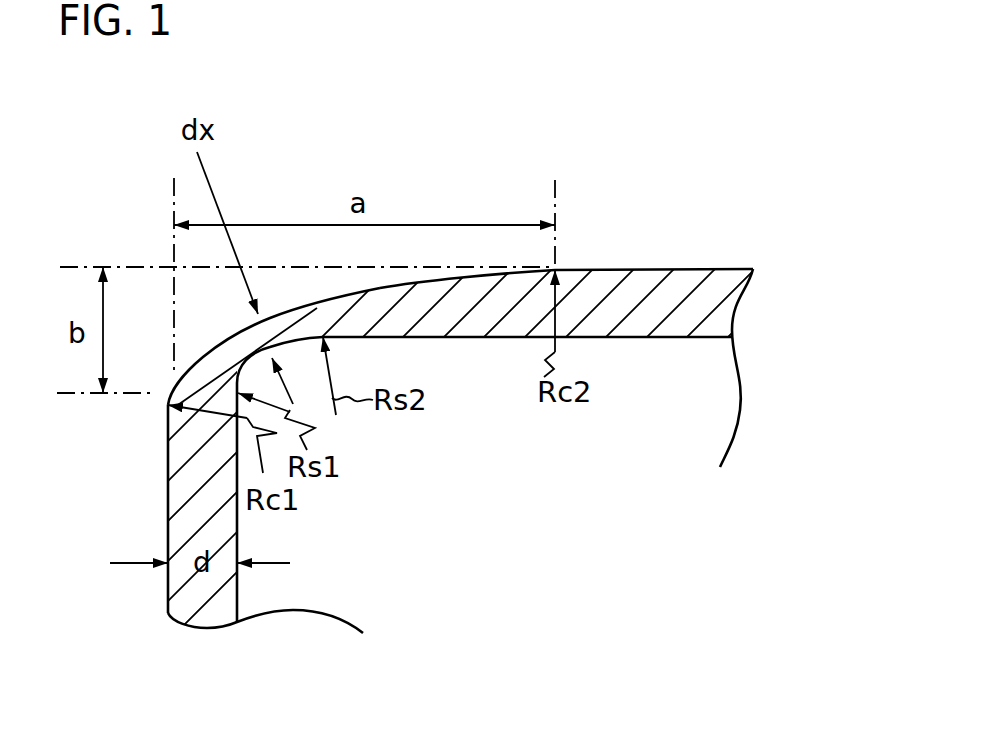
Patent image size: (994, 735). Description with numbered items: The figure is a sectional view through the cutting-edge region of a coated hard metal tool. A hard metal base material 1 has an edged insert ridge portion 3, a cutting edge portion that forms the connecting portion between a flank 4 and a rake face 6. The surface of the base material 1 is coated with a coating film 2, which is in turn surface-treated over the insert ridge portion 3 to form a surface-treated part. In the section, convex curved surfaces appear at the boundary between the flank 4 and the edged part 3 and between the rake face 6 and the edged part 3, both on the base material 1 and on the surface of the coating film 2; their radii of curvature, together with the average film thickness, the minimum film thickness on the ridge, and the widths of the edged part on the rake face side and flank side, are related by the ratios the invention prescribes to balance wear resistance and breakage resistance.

The hard metal base material 1 is at (655, 430).
The coating film 2 is at (737, 297).
The insert ridge portion 3 is at (213, 343).
The flank 4 is at (165, 510).
The rake face 6 is at (663, 267).